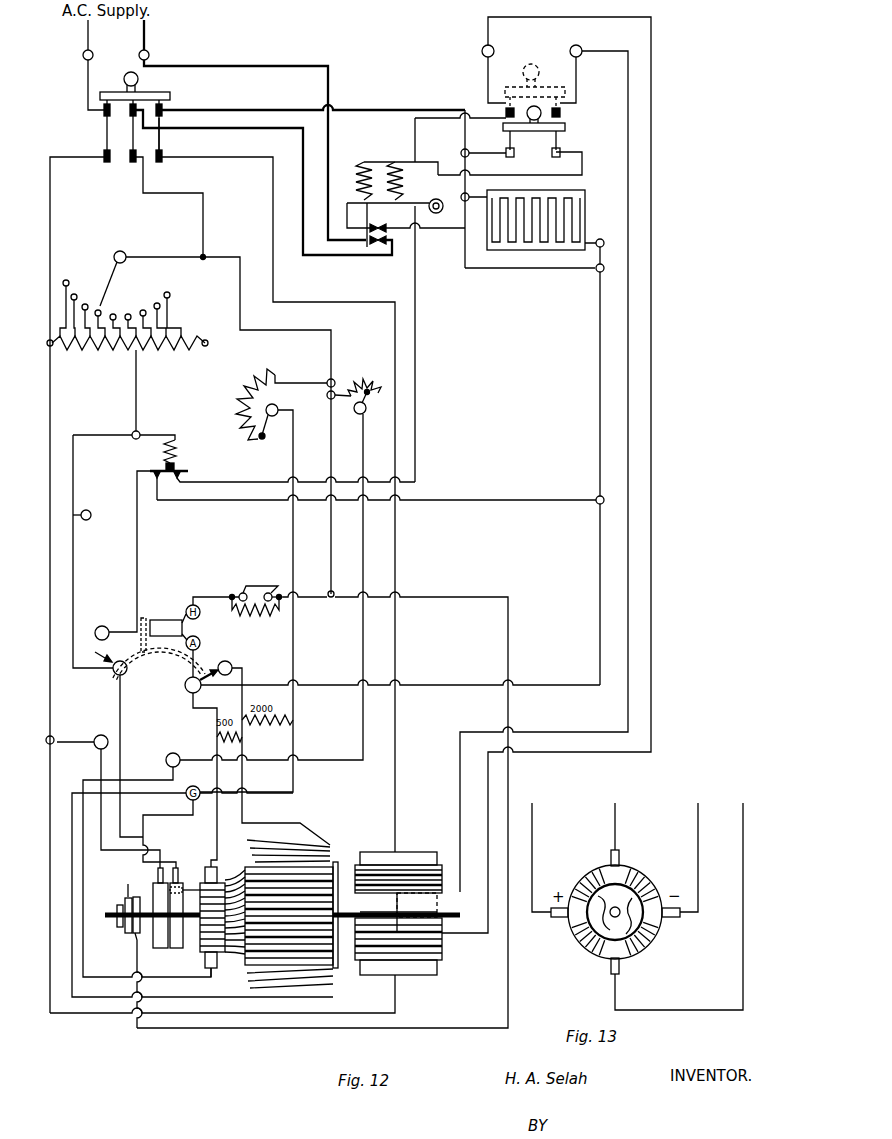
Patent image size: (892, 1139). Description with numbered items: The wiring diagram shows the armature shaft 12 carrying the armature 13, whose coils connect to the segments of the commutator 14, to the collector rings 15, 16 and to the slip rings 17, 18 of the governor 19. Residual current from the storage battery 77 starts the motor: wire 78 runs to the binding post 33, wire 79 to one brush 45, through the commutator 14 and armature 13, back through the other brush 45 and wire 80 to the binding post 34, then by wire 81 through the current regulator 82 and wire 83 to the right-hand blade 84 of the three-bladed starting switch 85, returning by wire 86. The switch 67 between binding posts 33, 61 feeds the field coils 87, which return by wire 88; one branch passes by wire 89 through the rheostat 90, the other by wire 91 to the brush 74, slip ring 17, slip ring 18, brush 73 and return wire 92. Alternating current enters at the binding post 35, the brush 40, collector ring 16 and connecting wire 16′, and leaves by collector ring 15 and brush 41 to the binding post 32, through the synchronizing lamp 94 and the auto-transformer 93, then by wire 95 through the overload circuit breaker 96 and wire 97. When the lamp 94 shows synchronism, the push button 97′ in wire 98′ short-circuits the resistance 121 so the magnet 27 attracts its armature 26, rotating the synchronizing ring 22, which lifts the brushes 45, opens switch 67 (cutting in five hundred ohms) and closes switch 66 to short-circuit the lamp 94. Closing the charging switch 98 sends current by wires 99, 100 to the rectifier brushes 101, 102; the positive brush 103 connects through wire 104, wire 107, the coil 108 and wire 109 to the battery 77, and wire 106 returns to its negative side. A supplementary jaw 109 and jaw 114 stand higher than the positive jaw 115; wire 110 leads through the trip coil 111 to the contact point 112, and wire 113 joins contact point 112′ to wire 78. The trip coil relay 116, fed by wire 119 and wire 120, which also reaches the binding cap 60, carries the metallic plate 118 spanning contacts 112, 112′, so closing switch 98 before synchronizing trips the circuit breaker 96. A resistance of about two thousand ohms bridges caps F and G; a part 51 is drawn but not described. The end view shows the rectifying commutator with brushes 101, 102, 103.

In FIG. 12, the armature shaft 12 is at (457, 911).
In FIG. 12, the armature 13 is at (336, 856).
In FIG. 12, the commutator 14 is at (231, 878).
In FIG. 12, the collector ring 15 is at (177, 950).
In FIG. 12, the collector ring 16 is at (157, 950).
In FIG. 12, the connecting wire 16′ is at (188, 886).
In FIG. 12, the slip ring 17 is at (136, 896).
In FIG. 12, the slip ring 18 is at (126, 935).
In FIG. 12, the governor 19 is at (117, 926).
In FIG. 12, the synchronizing ring 22 is at (159, 666).
In FIG. 12, the armature 26 is at (138, 625).
In FIG. 12, the magnet 27 is at (160, 618).
In FIG. 12, the binding post 32 is at (128, 675).
In FIG. 12, the binding post 33 is at (186, 692).
In FIG. 12, the binding post 34 is at (168, 756).
In FIG. 12, the binding post 35 is at (100, 735).
In FIG. 12, the brush 40 is at (160, 867).
In FIG. 12, the brush 41 is at (178, 866).
In FIG. 12, the brushes 45 is at (214, 866).
In FIG. 12, the field winding 51 is at (380, 920).
In FIG. 12, the binding cap 60 is at (100, 627).
In FIG. 12, the binding post 61 is at (233, 666).
In FIG. 12, the switch 66 is at (95, 654).
In FIG. 12, the switch 67 is at (203, 675).
In FIG. 12, the brush 73 is at (130, 955).
In FIG. 12, the brush 74 is at (126, 893).
In FIG. 12, the storage battery 77 is at (536, 199).
In FIG. 12, the wire 78 is at (598, 572).
In FIG. 12, the wire 79 is at (194, 720).
In FIG. 12, the wire 80 is at (164, 978).
In FIG. 12, the wire 81 is at (320, 758).
In FIG. 12, the current regulator 82 is at (354, 384).
In FIG. 12, the wire 83 is at (300, 305).
In FIG. 12, the blade 84 is at (162, 142).
In FIG. 12, the three-bladed starting switch 85 is at (171, 97).
In FIG. 12, the wire 86 is at (312, 178).
In FIG. 12, the field coils 87 is at (296, 822).
In FIG. 12, the wire 88 is at (199, 997).
In FIG. 12, the wire 89 is at (294, 641).
In FIG. 12, the rheostat 90 is at (279, 404).
In FIG. 12, the wire 91 is at (147, 816).
In FIG. 12, the return wire 92 is at (322, 821).
In FIG. 12, the auto-transformer 93 is at (189, 422).
In FIG. 12, the synchronizing lamp 94 is at (90, 512).
In FIG. 12, the wire 95 is at (296, 226).
In FIG. 12, the overload circuit breaker 96 is at (432, 199).
In FIG. 12, the wire 97 is at (278, 68).
In FIG. 12, the push button 97′ is at (262, 586).
In FIG. 12, the charging switch 98 is at (566, 130).
In FIG. 12, the wire 98′ is at (203, 594).
In FIG. 12, the wire 99 is at (239, 994).
In FIG. 13, the wire 99 is at (616, 992).
In FIG. 12, the wire 100 is at (396, 738).
In FIG. 13, the wire 100 is at (616, 815).
In FIG. 12, the rectifier commutator brush 101 is at (440, 968).
In FIG. 13, the rectifier commutator brush 101 is at (620, 966).
In FIG. 12, the rectifier commutator brush 102 is at (416, 851).
In FIG. 13, the rectifier commutator brush 102 is at (620, 860).
In FIG. 13, the positive brush 103 is at (559, 918).
In FIG. 12, the wire 104 is at (556, 732).
In FIG. 13, the wire 104 is at (533, 845).
In FIG. 12, the wire 106 is at (660, 724).
In FIG. 13, the wire 106 is at (699, 848).
In FIG. 12, the wire 107 is at (523, 157).
In FIG. 12, the coil 108 is at (358, 176).
In FIG. 12, the wire 109 is at (505, 118).
In FIG. 12, the wire 110 is at (428, 126).
In FIG. 12, the trip coil 111 is at (400, 185).
In FIG. 12, the contact point 112 is at (182, 484).
In FIG. 12, the contact point 112′ is at (162, 485).
In FIG. 12, the wire 113 is at (231, 505).
In FIG. 12, the jaw 114 is at (524, 82).
In FIG. 12, the positive jaw 115 is at (566, 106).
In FIG. 12, the trip coil relay 116 is at (180, 450).
In FIG. 12, the metallic plate 118 is at (176, 470).
In FIG. 12, the wire 119 is at (152, 432).
In FIG. 12, the wire 120 is at (138, 540).
In FIG. 12, the resistance 121 is at (252, 614).